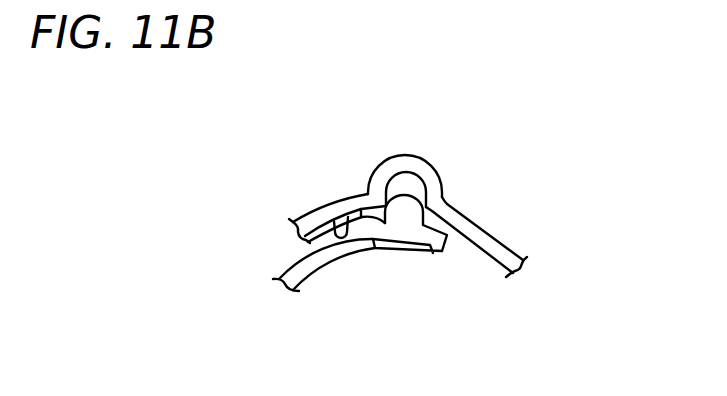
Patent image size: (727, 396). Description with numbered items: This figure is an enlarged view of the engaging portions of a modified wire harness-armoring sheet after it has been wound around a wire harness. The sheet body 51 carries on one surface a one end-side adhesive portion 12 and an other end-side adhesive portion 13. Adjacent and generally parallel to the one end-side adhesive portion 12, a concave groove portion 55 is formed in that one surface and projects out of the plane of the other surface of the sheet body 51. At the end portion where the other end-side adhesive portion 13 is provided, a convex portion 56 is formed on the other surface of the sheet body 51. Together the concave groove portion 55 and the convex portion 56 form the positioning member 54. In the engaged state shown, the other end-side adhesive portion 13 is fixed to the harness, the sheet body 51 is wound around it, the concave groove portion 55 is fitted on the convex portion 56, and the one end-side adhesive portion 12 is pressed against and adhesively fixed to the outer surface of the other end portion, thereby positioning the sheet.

The sheet body 51 is at (511, 250).
The positioning member 54 is at (378, 159).
The concave groove portion 55 is at (433, 172).
The convex portion 56 is at (413, 208).
The one end-side adhesive portion 12 is at (332, 231).
The other end-side adhesive portion 13 is at (408, 252).